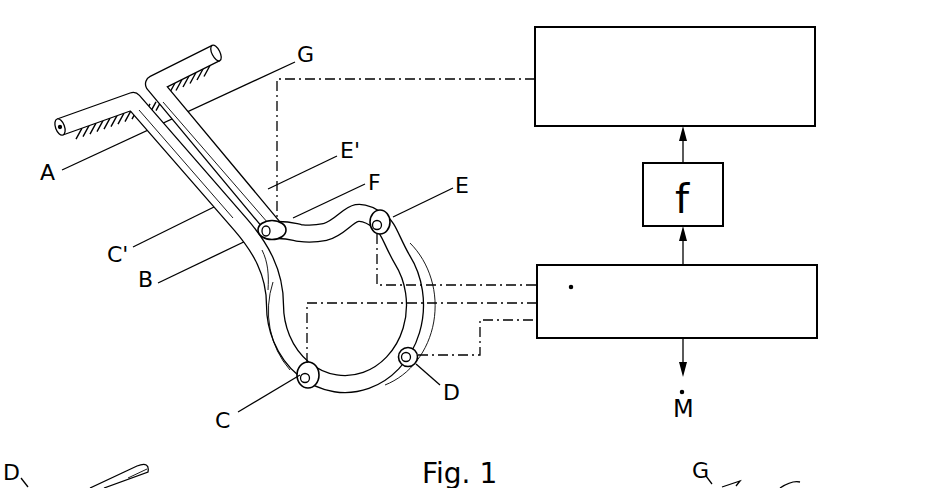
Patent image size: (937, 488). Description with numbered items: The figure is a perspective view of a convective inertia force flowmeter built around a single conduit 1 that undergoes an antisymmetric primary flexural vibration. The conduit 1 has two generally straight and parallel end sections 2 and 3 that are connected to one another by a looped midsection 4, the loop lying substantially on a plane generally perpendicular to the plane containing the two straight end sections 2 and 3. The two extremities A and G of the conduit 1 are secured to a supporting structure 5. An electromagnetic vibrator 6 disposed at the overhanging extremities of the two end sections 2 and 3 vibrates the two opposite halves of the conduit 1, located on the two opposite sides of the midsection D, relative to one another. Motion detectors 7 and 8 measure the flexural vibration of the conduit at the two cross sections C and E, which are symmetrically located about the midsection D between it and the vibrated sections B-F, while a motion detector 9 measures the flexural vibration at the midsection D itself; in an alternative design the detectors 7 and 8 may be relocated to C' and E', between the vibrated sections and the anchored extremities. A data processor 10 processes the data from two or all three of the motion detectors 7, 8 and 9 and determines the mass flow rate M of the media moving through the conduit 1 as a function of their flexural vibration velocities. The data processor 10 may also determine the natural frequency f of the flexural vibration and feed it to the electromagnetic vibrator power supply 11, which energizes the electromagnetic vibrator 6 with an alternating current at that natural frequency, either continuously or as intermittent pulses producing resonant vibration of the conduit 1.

The conduit 1 is at (258, 231).
The end section 2 is at (170, 163).
The end section 3 is at (218, 142).
The looped midsection 4 is at (266, 344).
The supporting structure 5 is at (218, 80).
The electromagnetic vibrator 6 is at (268, 273).
The motion detector 7 is at (318, 394).
The motion detector 8 is at (398, 224).
The motion detector 9 is at (405, 370).
The data processor 10 is at (597, 339).
The electromagnetic vibrator power supply 11 is at (534, 50).